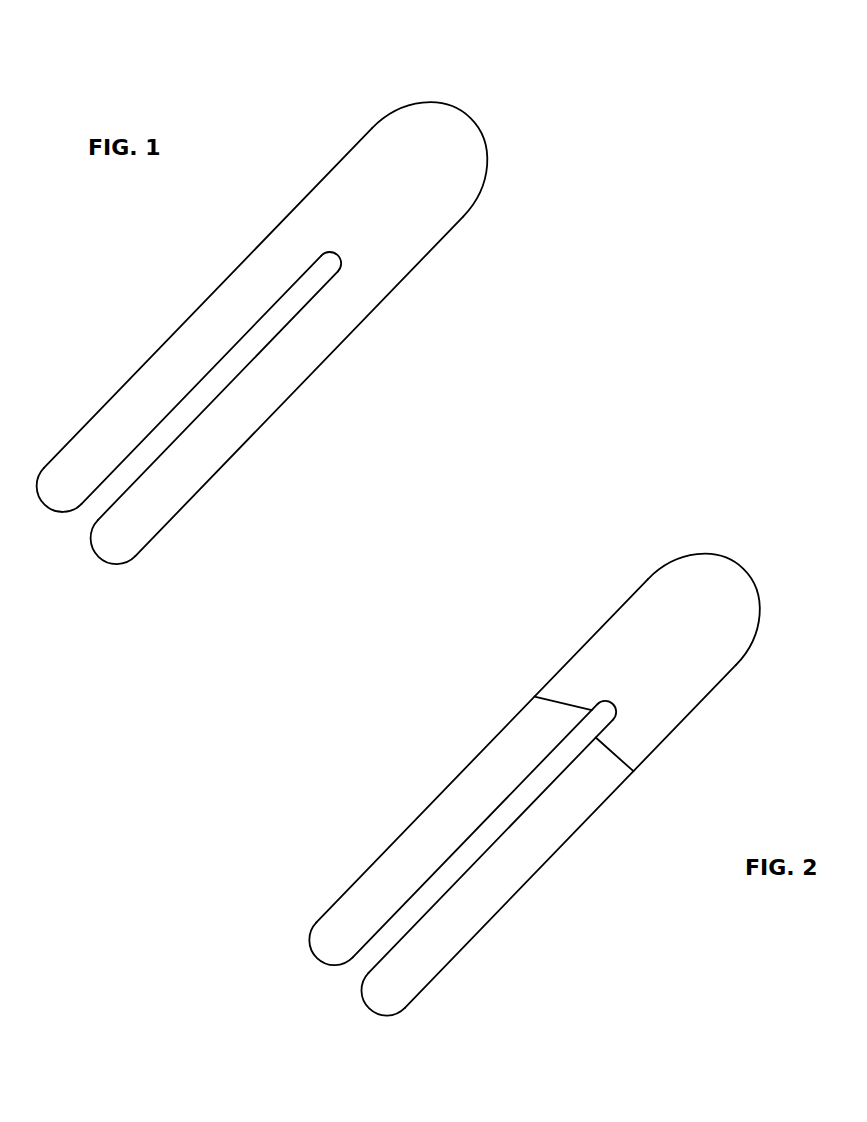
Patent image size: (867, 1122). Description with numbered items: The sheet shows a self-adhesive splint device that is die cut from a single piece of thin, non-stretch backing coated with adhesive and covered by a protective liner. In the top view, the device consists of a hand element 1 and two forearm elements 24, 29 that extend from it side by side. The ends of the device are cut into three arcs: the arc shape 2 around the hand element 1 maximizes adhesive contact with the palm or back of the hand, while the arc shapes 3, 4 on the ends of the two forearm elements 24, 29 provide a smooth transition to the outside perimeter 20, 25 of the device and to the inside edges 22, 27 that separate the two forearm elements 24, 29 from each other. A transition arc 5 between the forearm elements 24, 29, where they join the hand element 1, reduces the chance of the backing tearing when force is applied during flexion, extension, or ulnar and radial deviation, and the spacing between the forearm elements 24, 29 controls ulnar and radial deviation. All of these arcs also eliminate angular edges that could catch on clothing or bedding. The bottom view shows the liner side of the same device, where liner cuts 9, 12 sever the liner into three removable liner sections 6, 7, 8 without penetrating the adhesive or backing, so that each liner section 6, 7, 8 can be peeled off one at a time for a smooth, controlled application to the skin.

In FIG. 1, the hand element 1 is at (265, 336).
In FIG. 1, the arc shape 2 is at (475, 113).
In FIG. 2, the arc shape 2 is at (746, 567).
In FIG. 1, the arc shape 3 is at (43, 513).
In FIG. 2, the arc shape 3 is at (367, 1012).
In FIG. 1, the arc shape 4 is at (93, 562).
In FIG. 2, the arc shape 4 is at (313, 962).
In FIG. 1, the transition arc 5 is at (320, 260).
In FIG. 2, the transition arc 5 is at (603, 722).
In FIG. 2, the removable liner section 6 is at (539, 789).
In FIG. 2, the removable liner section 7 is at (487, 813).
In FIG. 2, the removable liner section 8 is at (541, 862).
In FIG. 2, the liner cut 9 is at (562, 707).
In FIG. 2, the liner cut 12 is at (612, 752).
In FIG. 1, the outside perimeter 20 is at (320, 365).
In FIG. 1, the inside edge 22 is at (238, 375).
In FIG. 1, the forearm element 24 is at (265, 430).
In FIG. 1, the outside perimeter 25 is at (233, 272).
In FIG. 1, the inside edge 27 is at (187, 393).
In FIG. 1, the forearm element 29 is at (193, 361).